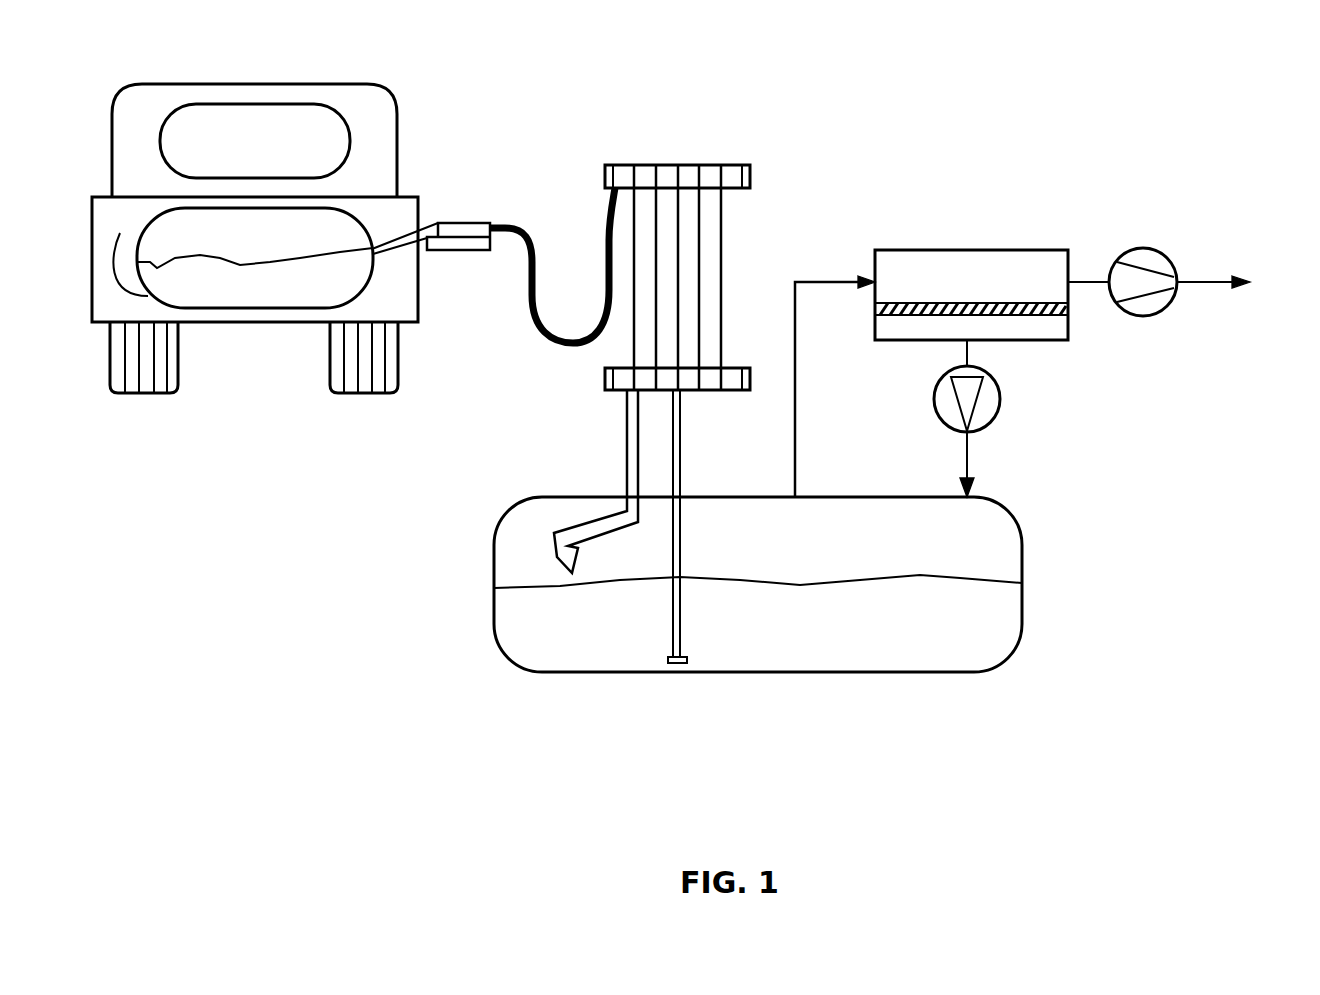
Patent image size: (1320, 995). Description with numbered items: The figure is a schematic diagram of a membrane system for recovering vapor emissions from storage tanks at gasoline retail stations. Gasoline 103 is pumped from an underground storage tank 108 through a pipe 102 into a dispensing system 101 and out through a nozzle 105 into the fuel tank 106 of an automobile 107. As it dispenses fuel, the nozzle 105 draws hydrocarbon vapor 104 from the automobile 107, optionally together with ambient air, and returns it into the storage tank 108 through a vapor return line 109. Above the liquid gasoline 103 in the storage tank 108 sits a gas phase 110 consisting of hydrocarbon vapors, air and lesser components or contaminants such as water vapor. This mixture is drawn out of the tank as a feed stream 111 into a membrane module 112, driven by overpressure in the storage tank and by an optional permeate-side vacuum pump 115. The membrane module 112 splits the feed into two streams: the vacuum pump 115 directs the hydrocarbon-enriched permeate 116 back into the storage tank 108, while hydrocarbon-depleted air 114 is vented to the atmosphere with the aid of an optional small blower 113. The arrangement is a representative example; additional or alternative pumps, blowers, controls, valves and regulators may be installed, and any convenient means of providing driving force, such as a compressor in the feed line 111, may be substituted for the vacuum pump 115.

The dispensing system 101 is at (620, 261).
The pipe 102 is at (705, 526).
The gasoline 103 is at (579, 447).
The hydrocarbon vapor 104 is at (255, 258).
The nozzle 105 is at (443, 220).
The fuel tank 106 is at (123, 250).
The automobile 107 is at (292, 84).
The underground storage tank 108 is at (500, 650).
The vapor return line 109 is at (595, 481).
The gas phase 110 is at (846, 552).
The feed stream 111 is at (835, 386).
The membrane module 112 is at (971, 277).
The blower 113 is at (1122, 264).
The hydrocarbon-depleted air 114 is at (1248, 288).
The vacuum pump 115 is at (998, 386).
The hydrocarbon-enriched permeate 116 is at (997, 464).